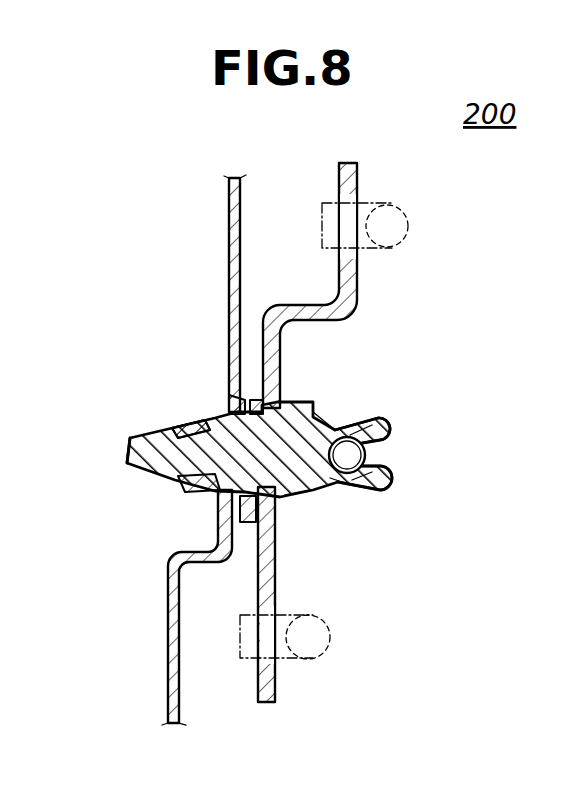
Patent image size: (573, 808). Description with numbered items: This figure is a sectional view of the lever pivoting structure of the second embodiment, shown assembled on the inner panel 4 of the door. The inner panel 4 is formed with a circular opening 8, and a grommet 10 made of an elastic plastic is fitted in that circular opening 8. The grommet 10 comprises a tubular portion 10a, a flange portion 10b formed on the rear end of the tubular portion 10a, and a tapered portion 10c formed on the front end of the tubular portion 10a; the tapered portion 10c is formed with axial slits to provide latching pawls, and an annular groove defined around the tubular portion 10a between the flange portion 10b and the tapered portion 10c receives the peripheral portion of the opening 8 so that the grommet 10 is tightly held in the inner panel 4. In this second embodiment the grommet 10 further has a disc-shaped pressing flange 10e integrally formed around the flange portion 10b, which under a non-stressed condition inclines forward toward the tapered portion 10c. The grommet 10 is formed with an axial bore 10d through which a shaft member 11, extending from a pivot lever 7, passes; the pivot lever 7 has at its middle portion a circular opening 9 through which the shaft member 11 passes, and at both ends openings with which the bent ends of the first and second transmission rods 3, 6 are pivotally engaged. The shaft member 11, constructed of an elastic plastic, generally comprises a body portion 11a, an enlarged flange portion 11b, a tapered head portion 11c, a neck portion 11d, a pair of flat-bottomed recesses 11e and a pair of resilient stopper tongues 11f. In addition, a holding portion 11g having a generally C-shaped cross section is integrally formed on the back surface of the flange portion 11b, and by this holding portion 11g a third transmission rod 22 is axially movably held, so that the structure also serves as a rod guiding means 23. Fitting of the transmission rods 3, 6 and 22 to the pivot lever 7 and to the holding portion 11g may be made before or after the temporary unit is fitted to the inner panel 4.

The first transmission rod 3 is at (326, 624).
The inner panel 4 is at (228, 246).
The second transmission rod 6 is at (396, 212).
The pivot lever 7 is at (358, 170).
The circular opening 8 is at (216, 528).
The circular opening 9 is at (278, 512).
The grommet 10 is at (178, 416).
The tubular portion 10a is at (236, 405).
The flange portion 10b is at (254, 406).
The tapered portion 10c is at (208, 496).
The axial bore 10d is at (172, 432).
The pressing flange 10e is at (246, 524).
The shaft member 11 is at (300, 392).
The body portion 11a is at (168, 482).
The enlarged flange portion 11b is at (307, 508).
The tapered head portion 11c is at (125, 448).
The neck portion 11d is at (178, 488).
The flat-bottomed recesses 11e is at (310, 413).
The resilient stopper tongues 11f is at (213, 423).
The holding portion 11g is at (378, 503).
The third transmission rod 22 is at (378, 453).
The rod guiding means 23 is at (400, 425).